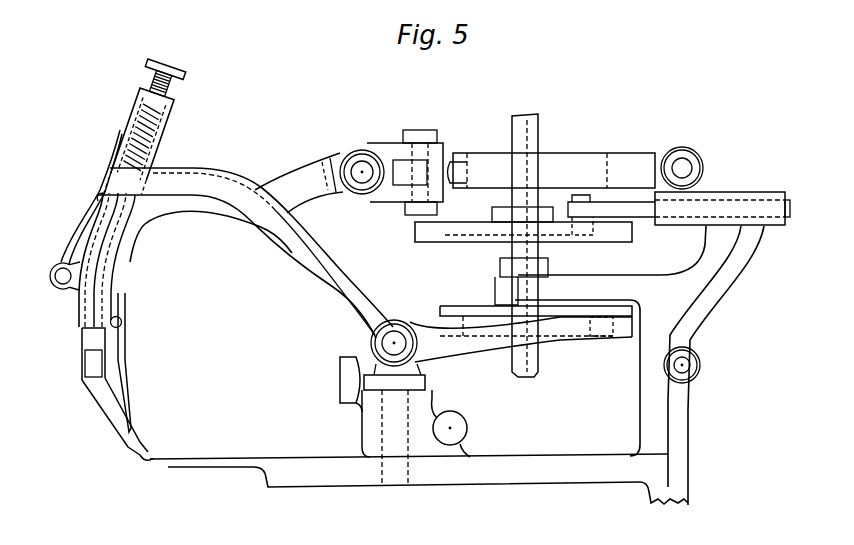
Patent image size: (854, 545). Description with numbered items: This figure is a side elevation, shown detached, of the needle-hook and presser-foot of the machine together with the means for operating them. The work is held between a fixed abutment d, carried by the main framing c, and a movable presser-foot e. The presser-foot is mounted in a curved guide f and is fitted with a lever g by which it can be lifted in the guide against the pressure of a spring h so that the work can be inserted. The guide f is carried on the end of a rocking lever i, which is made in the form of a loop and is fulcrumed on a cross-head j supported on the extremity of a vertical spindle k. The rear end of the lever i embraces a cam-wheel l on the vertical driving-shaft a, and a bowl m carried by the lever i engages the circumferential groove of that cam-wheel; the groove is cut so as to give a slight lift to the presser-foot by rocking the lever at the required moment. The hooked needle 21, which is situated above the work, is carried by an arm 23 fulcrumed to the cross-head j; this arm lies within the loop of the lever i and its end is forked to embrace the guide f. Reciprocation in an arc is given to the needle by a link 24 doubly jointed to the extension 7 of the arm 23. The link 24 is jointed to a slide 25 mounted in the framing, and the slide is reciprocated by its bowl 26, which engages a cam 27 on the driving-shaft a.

The vertical driving-shaft a is at (540, 126).
The main framing c is at (457, 365).
The fixed abutment d is at (140, 462).
The presser-foot e is at (127, 447).
The curved guide f is at (78, 310).
The lever g is at (74, 218).
The spring h is at (160, 128).
The rocking lever i is at (263, 210).
The cross-head j is at (390, 341).
The vertical spindle k is at (387, 422).
The cam-wheel l is at (577, 340).
The bowl m is at (600, 330).
The extension 7 is at (349, 172).
The hooked needle 21 is at (123, 405).
The arm 23 is at (133, 243).
The link 24 is at (521, 170).
The slide 25 is at (643, 210).
The bowl 26 is at (582, 230).
The cam 27 is at (605, 233).